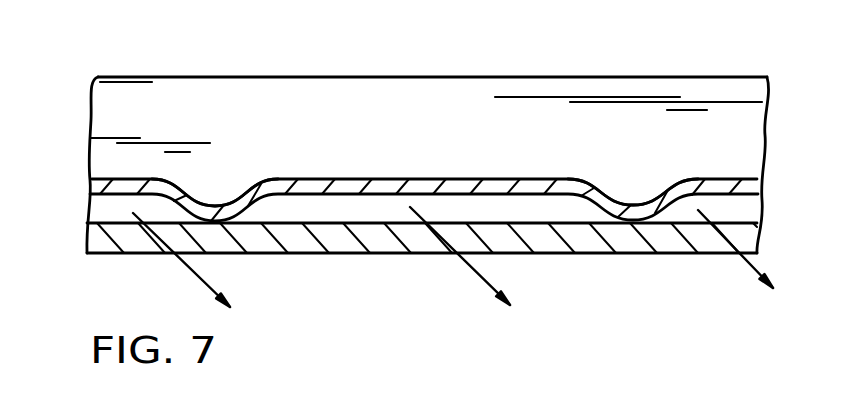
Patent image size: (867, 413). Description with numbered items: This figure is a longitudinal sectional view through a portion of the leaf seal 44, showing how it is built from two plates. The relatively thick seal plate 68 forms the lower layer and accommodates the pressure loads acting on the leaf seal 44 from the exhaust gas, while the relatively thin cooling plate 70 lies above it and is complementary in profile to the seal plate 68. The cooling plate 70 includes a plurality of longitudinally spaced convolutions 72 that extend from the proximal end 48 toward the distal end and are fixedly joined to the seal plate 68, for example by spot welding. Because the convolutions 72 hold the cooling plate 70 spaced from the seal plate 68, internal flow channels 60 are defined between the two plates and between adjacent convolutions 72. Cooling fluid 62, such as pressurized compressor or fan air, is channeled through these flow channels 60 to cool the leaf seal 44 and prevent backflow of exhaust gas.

The leaf seal 44 is at (662, 70).
The proximal end 48 is at (198, 100).
The cooling plate 70 is at (408, 177).
The convolutions 72 is at (220, 207).
The seal plate 68 is at (388, 253).
The internal flow channels 60 is at (533, 207).
The cooling fluid 62 is at (472, 272).